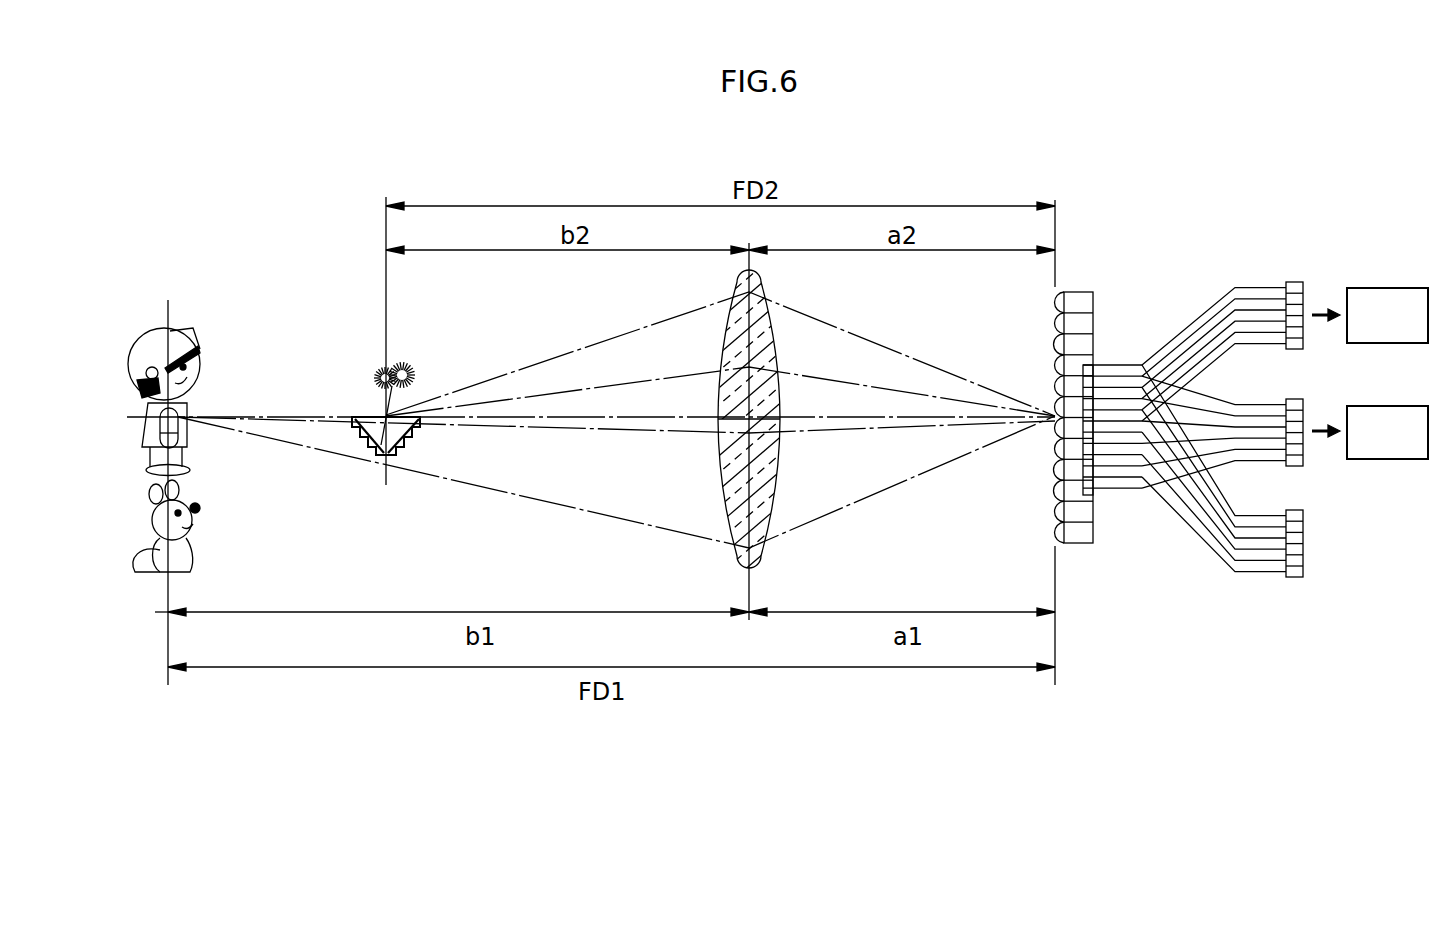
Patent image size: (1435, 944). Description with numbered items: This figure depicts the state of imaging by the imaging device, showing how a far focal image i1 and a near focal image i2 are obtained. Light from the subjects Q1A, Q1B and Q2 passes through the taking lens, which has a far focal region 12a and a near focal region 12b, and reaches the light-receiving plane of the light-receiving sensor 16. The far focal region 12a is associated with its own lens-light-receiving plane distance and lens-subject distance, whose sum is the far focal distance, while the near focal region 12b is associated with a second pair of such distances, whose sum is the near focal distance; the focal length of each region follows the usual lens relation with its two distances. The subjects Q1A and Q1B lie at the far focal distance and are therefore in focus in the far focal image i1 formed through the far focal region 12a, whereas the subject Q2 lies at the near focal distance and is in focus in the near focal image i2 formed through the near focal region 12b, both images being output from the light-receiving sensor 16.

The subject Q1A is at (208, 320).
The subject Q1B is at (214, 517).
The subject Q2 is at (418, 357).
The far focal region 12a is at (779, 465).
The near focal region 12b is at (781, 350).
The light-receiving sensor 16 is at (1082, 277).
The far focal image i1 is at (1385, 288).
The near focal image i2 is at (1385, 406).